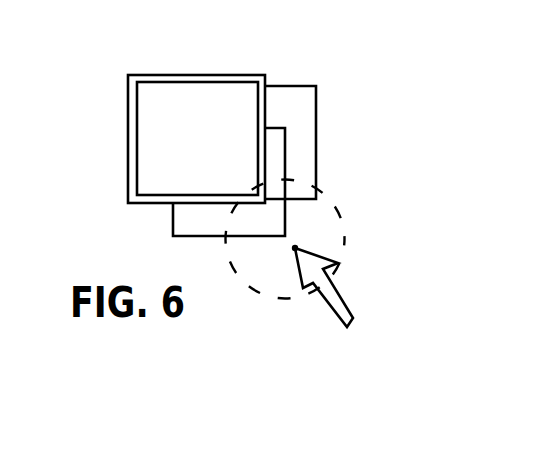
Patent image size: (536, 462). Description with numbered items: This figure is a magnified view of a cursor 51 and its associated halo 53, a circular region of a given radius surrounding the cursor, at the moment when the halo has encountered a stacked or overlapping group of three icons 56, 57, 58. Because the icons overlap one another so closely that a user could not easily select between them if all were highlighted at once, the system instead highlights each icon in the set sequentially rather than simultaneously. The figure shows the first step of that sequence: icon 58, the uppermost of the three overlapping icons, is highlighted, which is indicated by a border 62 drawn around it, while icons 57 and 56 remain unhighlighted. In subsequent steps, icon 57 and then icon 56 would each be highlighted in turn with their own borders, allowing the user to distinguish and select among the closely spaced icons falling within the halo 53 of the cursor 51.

The cursor 51 is at (325, 305).
The halo 53 is at (332, 248).
The icon 56 is at (283, 86).
The icon 57 is at (285, 128).
The icon 58 is at (162, 138).
The border 62 is at (157, 82).